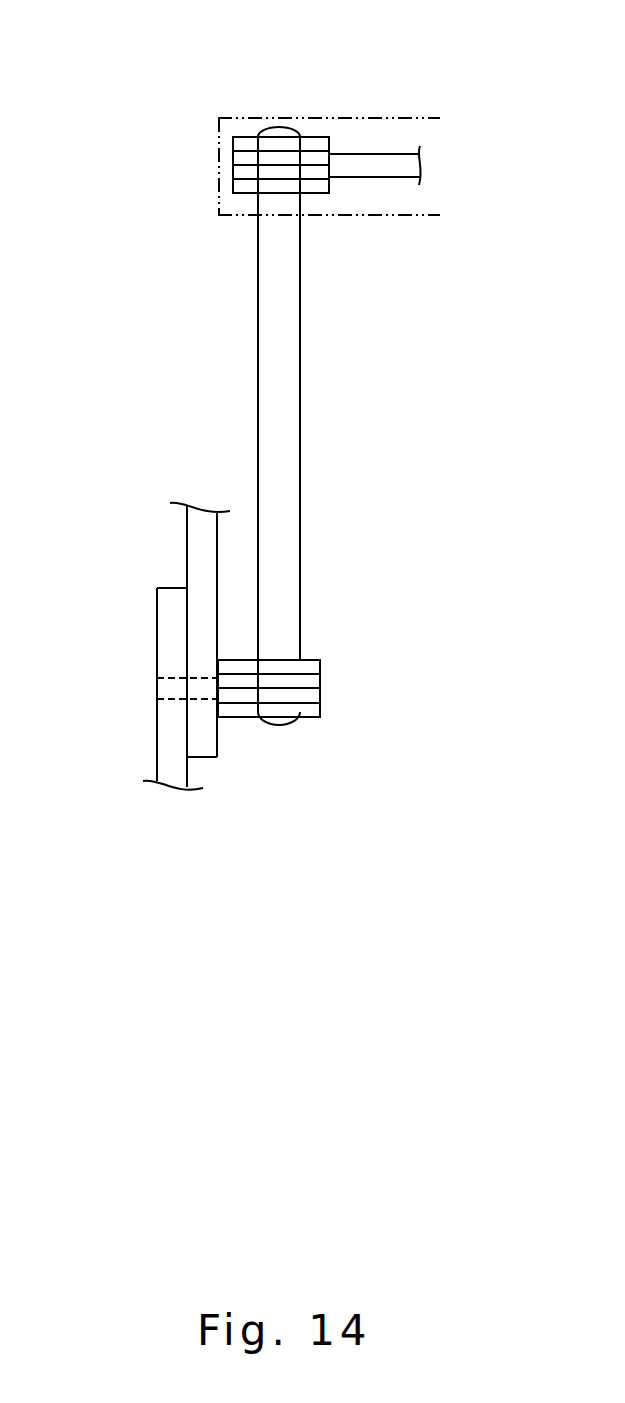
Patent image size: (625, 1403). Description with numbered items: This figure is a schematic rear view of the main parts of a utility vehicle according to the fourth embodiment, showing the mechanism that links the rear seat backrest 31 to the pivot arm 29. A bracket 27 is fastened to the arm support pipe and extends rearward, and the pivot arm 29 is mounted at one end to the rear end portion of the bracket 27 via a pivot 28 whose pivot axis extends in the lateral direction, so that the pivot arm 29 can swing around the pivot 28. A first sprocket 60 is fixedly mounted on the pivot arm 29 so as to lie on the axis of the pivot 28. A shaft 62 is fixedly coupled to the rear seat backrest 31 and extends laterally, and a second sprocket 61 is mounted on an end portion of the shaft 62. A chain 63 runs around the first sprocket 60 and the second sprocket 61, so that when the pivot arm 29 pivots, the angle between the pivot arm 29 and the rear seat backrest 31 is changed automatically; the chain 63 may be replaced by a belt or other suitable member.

The bracket 27 is at (155, 748).
The pivot 28 is at (172, 677).
The pivot arm 29 is at (186, 555).
The rear seat backrest 31 is at (409, 118).
The first sprocket 60 is at (320, 688).
The second sprocket 61 is at (315, 137).
The shaft 62 is at (392, 178).
The chain 63 is at (301, 415).